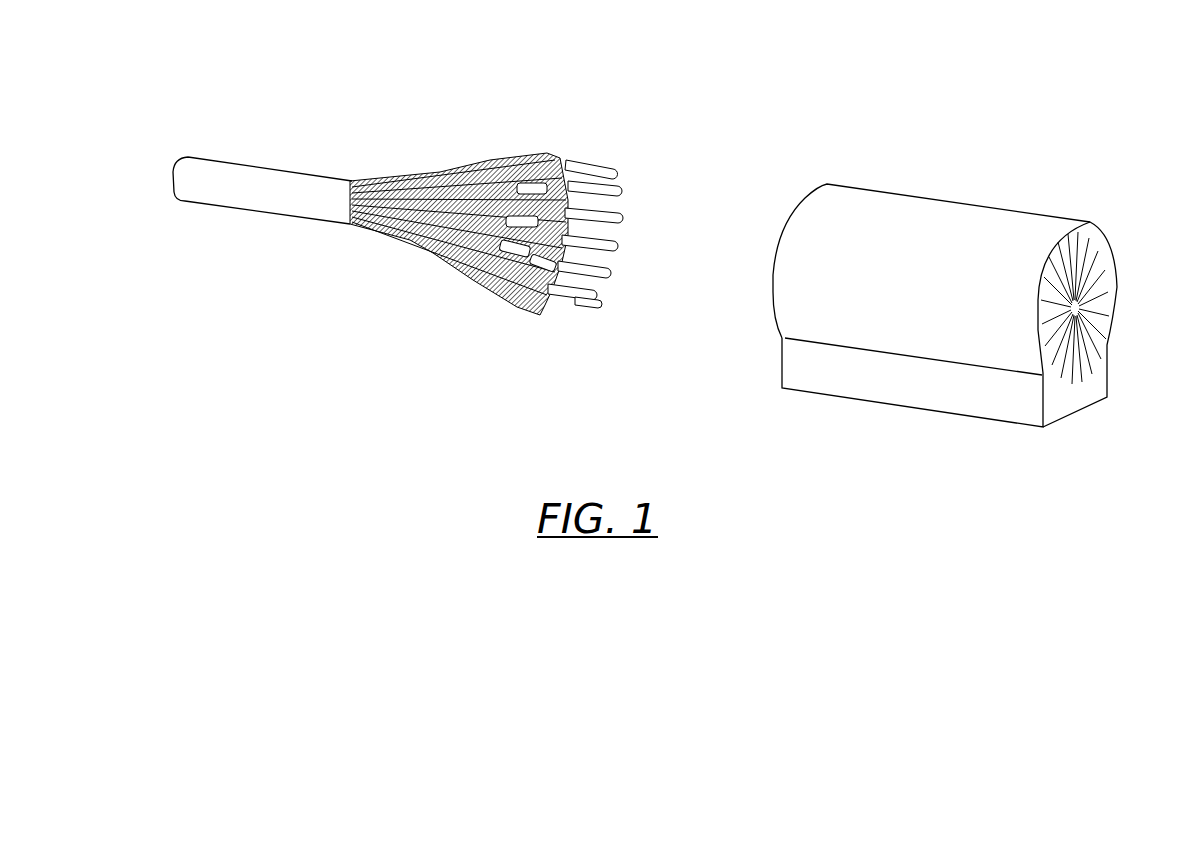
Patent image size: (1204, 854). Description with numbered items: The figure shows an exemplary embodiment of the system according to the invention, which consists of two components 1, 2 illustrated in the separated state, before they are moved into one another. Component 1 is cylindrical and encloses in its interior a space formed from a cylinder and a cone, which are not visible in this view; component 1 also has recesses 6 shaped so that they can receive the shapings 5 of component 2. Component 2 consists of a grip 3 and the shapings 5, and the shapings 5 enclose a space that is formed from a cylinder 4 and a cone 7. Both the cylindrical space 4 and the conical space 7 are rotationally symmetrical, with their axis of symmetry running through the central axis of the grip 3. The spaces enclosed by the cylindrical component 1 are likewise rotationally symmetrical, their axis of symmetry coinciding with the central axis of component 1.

The component 1 is at (978, 278).
The component 2 is at (390, 221).
The grip 3 is at (216, 205).
The cylinder 4 is at (562, 230).
The shapings 5 is at (512, 303).
The recesses 6 is at (1105, 322).
The cone 7 is at (455, 280).